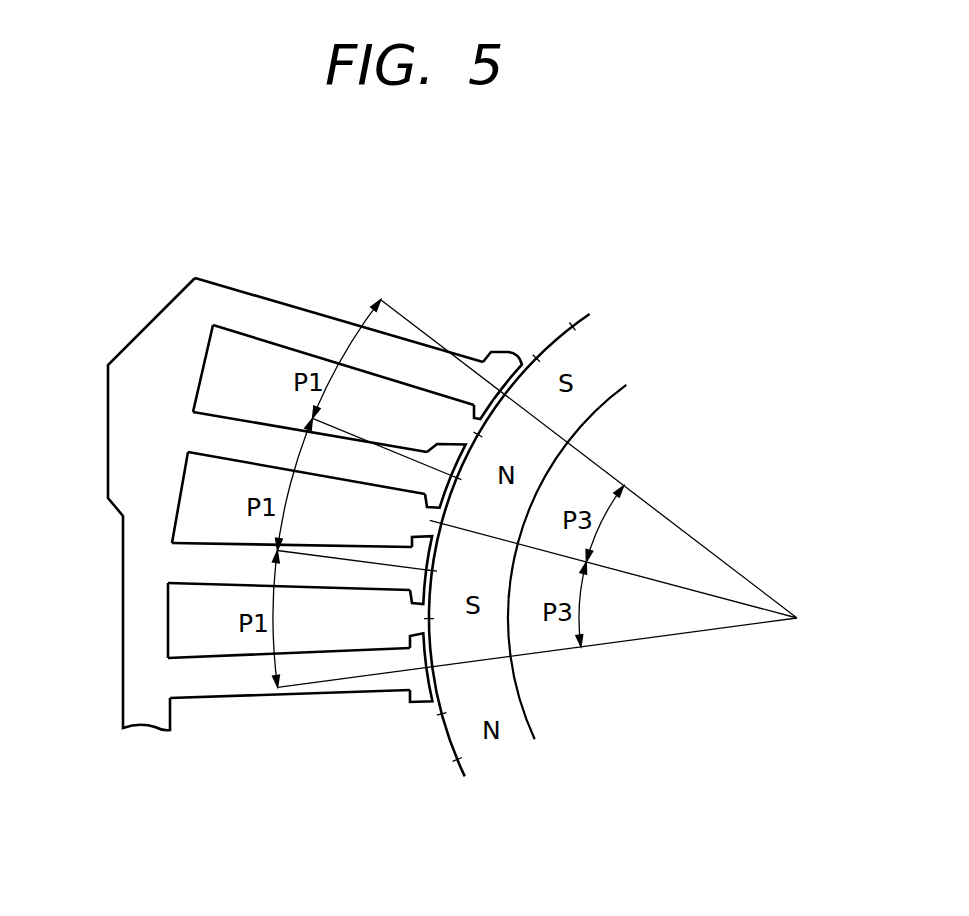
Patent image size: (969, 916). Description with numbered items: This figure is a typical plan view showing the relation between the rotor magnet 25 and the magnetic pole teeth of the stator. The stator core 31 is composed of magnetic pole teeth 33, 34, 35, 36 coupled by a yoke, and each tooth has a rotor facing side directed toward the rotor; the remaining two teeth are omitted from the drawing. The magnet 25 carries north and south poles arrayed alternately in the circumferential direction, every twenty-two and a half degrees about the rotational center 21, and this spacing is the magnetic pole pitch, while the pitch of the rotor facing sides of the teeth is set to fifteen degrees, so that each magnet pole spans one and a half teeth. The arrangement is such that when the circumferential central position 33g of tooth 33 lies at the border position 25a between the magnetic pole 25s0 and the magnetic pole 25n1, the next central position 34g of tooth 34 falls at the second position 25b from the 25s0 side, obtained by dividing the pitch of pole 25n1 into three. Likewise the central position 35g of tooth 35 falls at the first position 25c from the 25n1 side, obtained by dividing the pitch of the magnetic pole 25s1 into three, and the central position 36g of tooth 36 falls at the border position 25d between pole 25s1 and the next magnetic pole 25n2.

The stator core 31 is at (136, 337).
The magnetic pole teeth 33 is at (300, 313).
The magnetic pole teeth 34 is at (235, 433).
The magnetic pole teeth 35 is at (205, 557).
The magnetic pole teeth 36 is at (210, 668).
The circumferential central position 33g is at (487, 358).
The circumferential central position 34g is at (433, 453).
The circumferential central position 35g is at (412, 548).
The circumferential central position 36g is at (407, 690).
The rotational center 21 is at (799, 618).
The magnet 25 is at (503, 783).
The border position 25a is at (503, 393).
The second position 25b is at (452, 478).
The first position 25c is at (433, 570).
The border position 25d is at (430, 672).
The magnetic pole 25s0 is at (577, 412).
The magnetic pole 25n1 is at (562, 465).
The magnetic pole 25s1 is at (495, 635).
The magnetic pole 25n2 is at (520, 735).